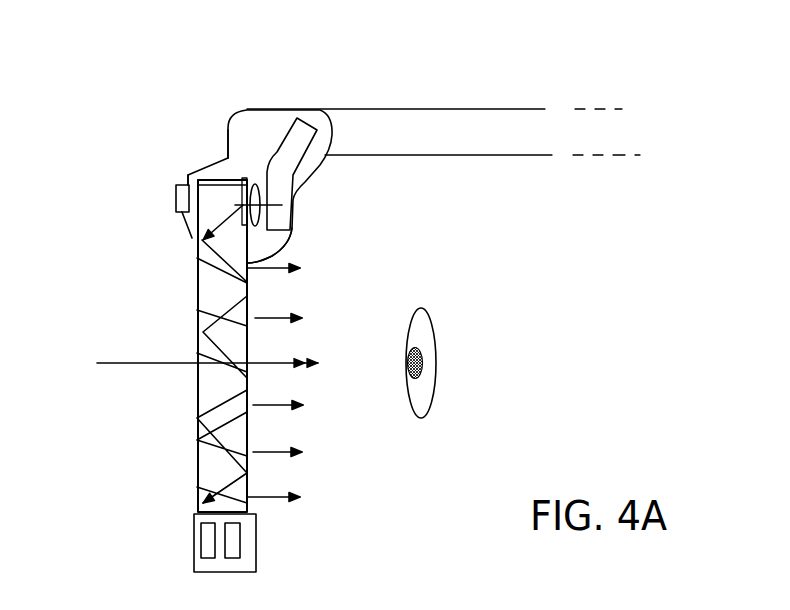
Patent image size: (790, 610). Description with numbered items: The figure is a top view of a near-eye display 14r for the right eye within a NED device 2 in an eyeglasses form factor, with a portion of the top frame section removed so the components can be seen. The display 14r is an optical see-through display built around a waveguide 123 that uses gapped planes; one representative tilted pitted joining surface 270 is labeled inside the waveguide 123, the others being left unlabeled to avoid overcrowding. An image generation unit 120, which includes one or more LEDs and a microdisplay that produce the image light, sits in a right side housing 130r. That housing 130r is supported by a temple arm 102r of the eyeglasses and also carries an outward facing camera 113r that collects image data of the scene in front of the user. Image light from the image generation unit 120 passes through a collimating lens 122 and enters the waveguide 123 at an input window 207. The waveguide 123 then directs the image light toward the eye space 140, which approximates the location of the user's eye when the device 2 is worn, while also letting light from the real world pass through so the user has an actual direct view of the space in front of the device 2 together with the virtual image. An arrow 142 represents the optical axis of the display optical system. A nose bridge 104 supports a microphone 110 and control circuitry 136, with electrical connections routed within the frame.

The NED device 2 is at (350, 88).
The right side housing 130r is at (230, 121).
The input window 207 is at (244, 178).
The image generation unit 120 is at (300, 190).
The collimating lens 122 is at (285, 232).
The temple arm 102r is at (443, 147).
The outward facing camera 113r is at (176, 202).
The waveguide 123 is at (197, 450).
The tilted pitted joining surface 270 is at (200, 300).
The optical axis 142 is at (135, 362).
The near-eye display 14r is at (92, 423).
The eye space 140 is at (435, 350).
The nose bridge 104 is at (257, 542).
The microphone 110 is at (205, 528).
The control circuitry 136 is at (230, 555).